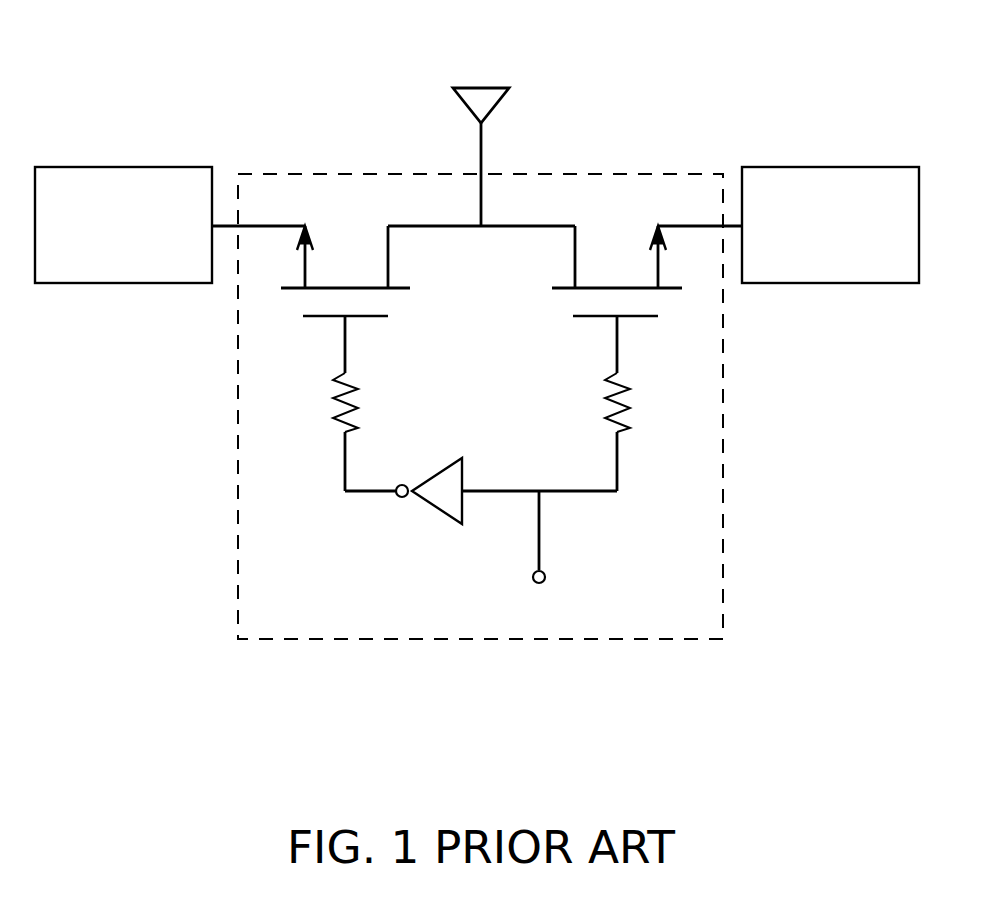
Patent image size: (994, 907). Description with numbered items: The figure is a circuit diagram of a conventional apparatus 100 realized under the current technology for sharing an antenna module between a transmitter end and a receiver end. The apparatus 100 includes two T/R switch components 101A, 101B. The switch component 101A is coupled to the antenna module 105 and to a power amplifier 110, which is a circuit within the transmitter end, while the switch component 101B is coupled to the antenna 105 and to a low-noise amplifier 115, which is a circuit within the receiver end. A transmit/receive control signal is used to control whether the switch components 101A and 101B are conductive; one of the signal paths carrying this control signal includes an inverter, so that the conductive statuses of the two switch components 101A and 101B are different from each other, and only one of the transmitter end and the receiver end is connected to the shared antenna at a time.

The apparatus 100 is at (480, 640).
The T/R switch component 101A is at (320, 212).
The T/R switch component 101B is at (640, 213).
The antenna module 105 is at (482, 88).
The power amplifier 110 is at (122, 283).
The low-noise amplifier 115 is at (830, 283).